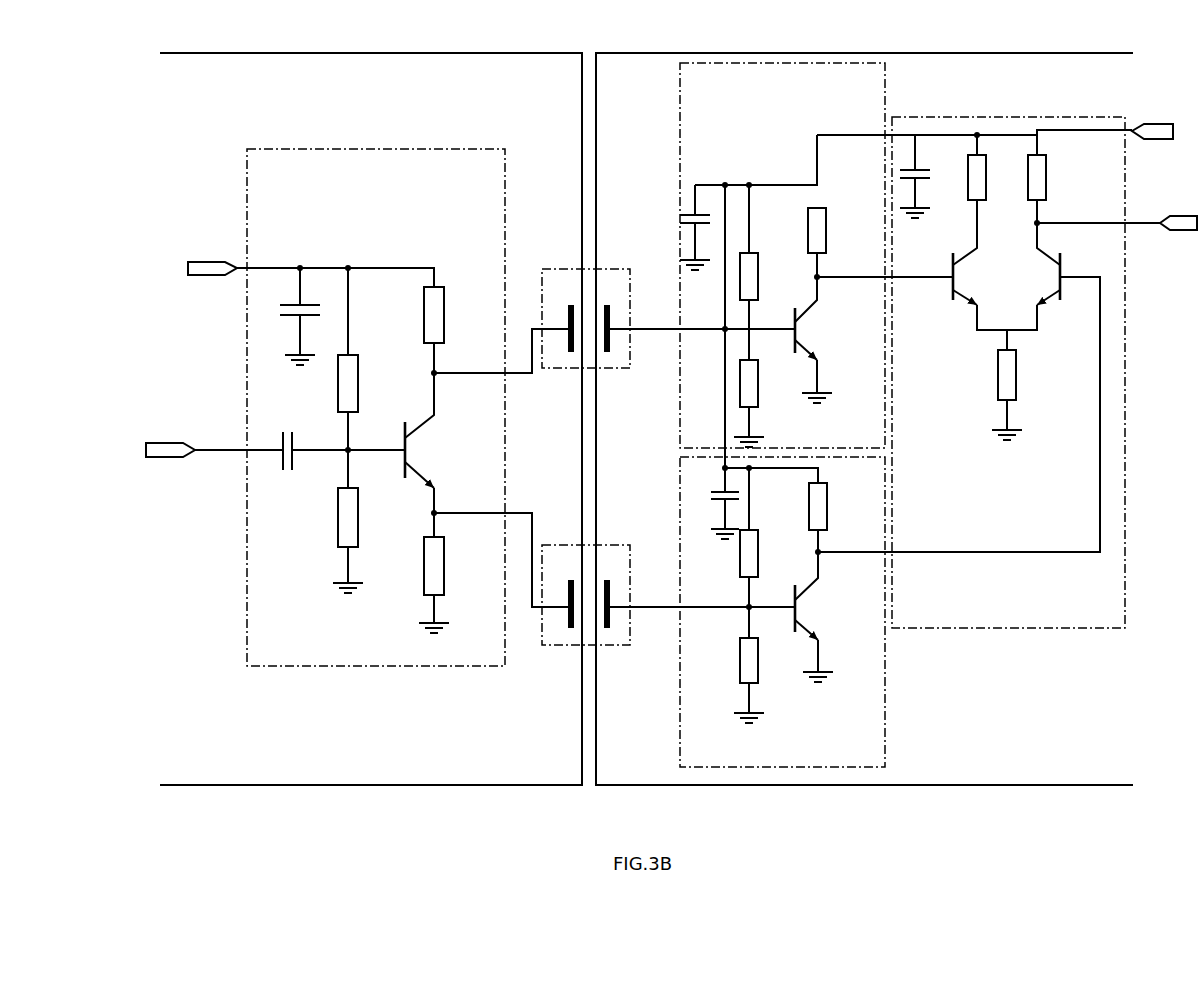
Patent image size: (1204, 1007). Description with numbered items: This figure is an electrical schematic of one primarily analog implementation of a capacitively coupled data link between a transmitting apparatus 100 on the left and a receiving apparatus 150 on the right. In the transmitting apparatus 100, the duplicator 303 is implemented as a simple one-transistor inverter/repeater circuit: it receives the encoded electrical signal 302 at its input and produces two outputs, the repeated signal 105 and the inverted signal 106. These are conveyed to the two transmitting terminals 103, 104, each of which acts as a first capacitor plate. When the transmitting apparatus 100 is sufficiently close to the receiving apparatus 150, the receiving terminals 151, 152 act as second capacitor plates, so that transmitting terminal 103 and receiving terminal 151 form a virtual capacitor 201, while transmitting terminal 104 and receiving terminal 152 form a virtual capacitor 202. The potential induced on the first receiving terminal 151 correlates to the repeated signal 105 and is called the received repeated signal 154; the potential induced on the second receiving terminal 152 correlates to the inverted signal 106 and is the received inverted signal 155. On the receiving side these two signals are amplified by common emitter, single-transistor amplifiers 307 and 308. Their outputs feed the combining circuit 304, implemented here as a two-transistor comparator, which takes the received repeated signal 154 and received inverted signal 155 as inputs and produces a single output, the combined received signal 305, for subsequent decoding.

The transmitting apparatus 100 is at (313, 52).
The receiving apparatus 150 is at (910, 52).
The duplicator 303 is at (360, 149).
The encoded electrical signal 302 is at (165, 442).
The repeated signal 105 is at (515, 376).
The inverted signal 106 is at (515, 511).
The virtual capacitor 201 is at (605, 268).
The virtual capacitor 202 is at (605, 544).
The transmitting terminal 103 is at (571, 304).
The transmitting terminal 104 is at (571, 579).
The receiving terminal 151 is at (611, 290).
The receiving terminal 152 is at (611, 565).
The received repeated signal 154 is at (660, 331).
The received inverted signal 155 is at (655, 609).
The common emitter single-transistor amplifier 307 is at (678, 152).
The common emitter single-transistor amplifier 308 is at (678, 699).
The combining circuit 304 is at (997, 116).
The combined received signal 305 is at (1170, 214).